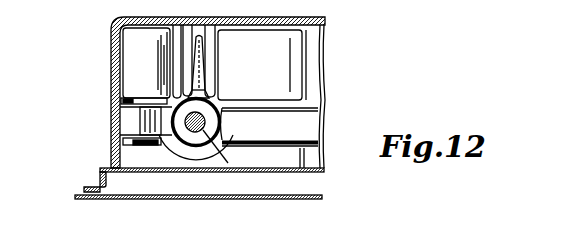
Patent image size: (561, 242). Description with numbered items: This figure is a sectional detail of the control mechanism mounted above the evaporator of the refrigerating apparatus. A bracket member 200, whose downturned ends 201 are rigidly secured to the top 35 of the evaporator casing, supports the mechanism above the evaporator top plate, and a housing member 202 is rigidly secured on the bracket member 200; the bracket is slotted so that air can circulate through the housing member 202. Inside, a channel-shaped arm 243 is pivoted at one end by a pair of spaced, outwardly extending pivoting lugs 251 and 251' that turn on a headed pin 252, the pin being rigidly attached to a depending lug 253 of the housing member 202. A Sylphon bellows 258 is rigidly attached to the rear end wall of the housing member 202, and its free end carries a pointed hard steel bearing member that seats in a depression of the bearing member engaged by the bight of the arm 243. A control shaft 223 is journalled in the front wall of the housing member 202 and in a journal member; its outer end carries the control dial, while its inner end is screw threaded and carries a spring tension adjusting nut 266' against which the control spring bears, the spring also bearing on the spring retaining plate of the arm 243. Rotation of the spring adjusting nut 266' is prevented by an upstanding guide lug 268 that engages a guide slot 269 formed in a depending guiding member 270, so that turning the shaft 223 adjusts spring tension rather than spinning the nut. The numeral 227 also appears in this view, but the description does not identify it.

The housing member 202 is at (112, 82).
The bracket member 200 is at (204, 172).
The downturned ends 201 is at (100, 177).
The top of the evaporator casing 35 is at (216, 199).
The depending lug 253 is at (140, 54).
The guide slot 269 is at (199, 37).
The depending guiding member 270 is at (211, 30).
The upstanding guide lug 268 is at (208, 98).
The member 227 is at (437, 3).
The spring tension adjusting nut 266' is at (240, 96).
The arm 243 is at (270, 126).
The control shaft 223 is at (214, 148).
The Sylphon bellows 258 is at (222, 163).
The pivoting lug 251 is at (116, 103).
The headed pin 252 is at (137, 126).
The pivoting lug 251' is at (108, 149).